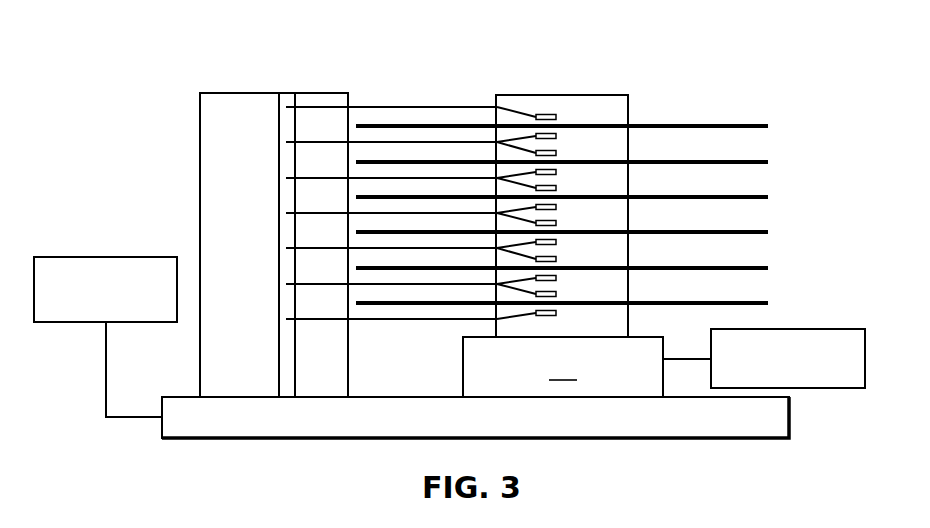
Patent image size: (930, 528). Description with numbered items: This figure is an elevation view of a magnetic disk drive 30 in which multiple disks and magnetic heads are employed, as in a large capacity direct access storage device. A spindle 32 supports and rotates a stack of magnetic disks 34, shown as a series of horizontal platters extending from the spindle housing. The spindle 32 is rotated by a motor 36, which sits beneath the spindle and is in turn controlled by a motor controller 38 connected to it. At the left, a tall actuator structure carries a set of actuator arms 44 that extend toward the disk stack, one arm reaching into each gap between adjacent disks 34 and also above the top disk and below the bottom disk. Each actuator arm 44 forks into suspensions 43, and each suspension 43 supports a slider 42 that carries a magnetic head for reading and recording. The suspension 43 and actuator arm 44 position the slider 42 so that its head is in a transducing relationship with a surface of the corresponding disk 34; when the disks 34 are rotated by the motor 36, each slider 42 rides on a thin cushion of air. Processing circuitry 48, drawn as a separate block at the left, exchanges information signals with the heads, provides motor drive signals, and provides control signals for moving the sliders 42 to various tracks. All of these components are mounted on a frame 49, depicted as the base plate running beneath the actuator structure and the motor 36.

The magnetic disk drive 30 is at (701, 100).
The spindle 32 is at (617, 95).
The magnetic disk 34 is at (766, 127).
The motor 36 is at (563, 367).
The motor controller 38 is at (828, 388).
The slider 42 is at (558, 137).
The suspension 43 is at (529, 134).
The actuator arm 44 is at (463, 141).
The processing circuitry 48 is at (77, 257).
The frame 49 is at (214, 438).